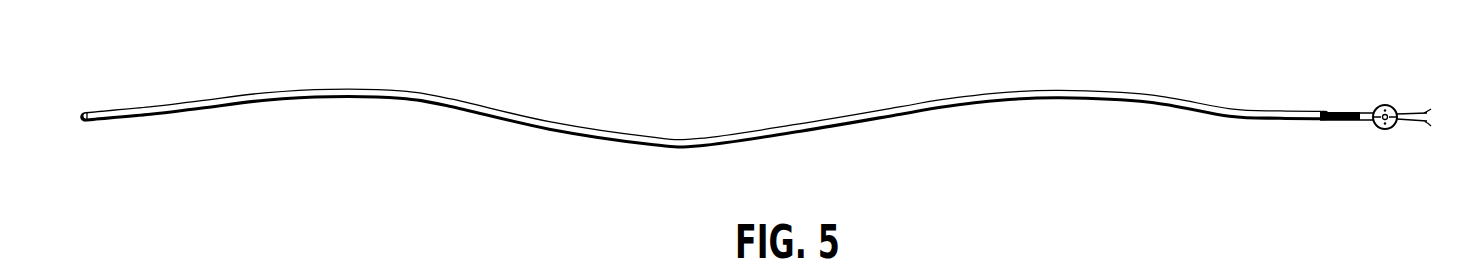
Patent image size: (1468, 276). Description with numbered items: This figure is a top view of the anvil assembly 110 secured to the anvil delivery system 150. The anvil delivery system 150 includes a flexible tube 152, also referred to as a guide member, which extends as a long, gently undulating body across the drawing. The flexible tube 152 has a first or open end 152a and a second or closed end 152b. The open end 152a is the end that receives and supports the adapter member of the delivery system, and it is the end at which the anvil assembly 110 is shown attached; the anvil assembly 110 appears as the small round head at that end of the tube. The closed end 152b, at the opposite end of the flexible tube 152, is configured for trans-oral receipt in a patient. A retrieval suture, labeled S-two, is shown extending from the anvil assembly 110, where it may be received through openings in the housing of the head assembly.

The anvil delivery system 150 is at (770, 90).
The flexible tube 152 is at (676, 137).
The open end 152a is at (1318, 108).
The closed end 152b is at (98, 112).
The anvil assembly 110 is at (1375, 101).